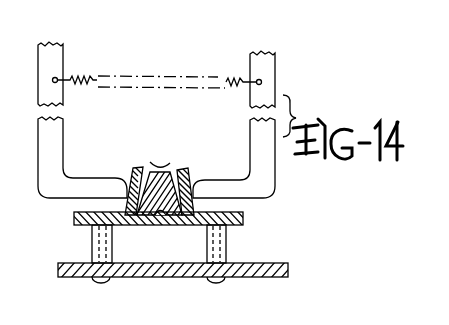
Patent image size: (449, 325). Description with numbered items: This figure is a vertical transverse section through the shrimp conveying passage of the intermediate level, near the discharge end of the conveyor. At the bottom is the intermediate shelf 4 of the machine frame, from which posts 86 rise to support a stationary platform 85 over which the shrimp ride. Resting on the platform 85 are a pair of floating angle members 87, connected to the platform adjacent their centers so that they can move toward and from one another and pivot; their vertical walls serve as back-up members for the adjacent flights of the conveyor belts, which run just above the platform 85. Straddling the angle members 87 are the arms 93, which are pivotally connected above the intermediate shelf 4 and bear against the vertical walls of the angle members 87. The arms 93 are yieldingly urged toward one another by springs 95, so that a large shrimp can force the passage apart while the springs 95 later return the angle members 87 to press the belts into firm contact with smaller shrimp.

The intermediate shelf 4 is at (257, 278).
The platform 85 is at (82, 226).
The posts 86 is at (207, 245).
The floating angle members 87 is at (129, 170).
The arms 93 is at (40, 126).
The springs 95 is at (122, 74).